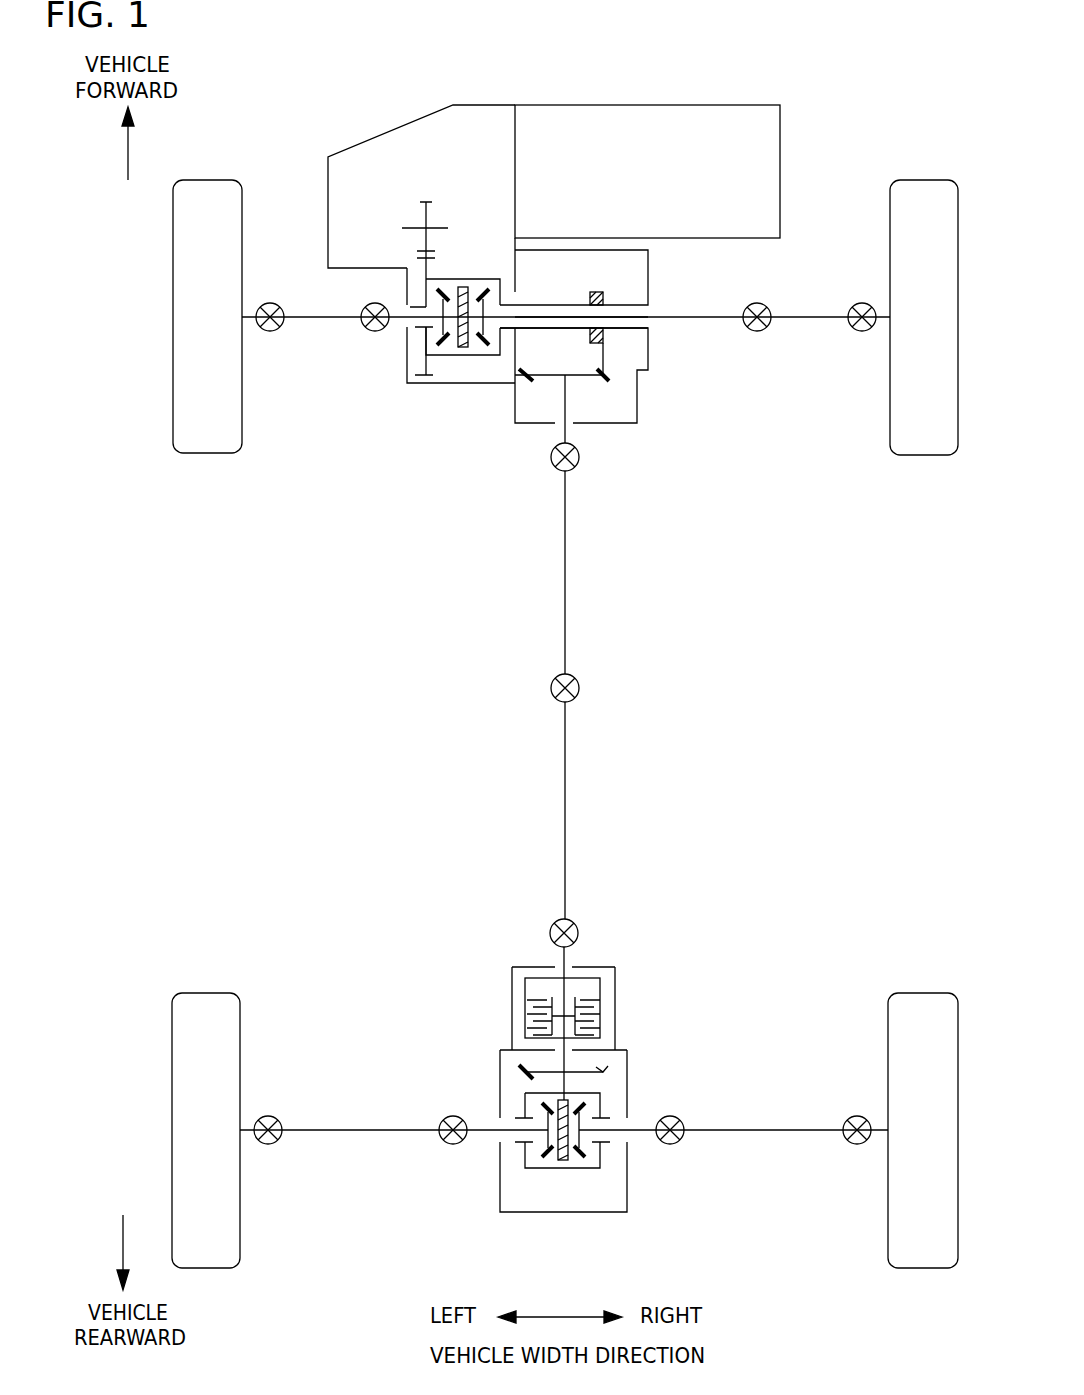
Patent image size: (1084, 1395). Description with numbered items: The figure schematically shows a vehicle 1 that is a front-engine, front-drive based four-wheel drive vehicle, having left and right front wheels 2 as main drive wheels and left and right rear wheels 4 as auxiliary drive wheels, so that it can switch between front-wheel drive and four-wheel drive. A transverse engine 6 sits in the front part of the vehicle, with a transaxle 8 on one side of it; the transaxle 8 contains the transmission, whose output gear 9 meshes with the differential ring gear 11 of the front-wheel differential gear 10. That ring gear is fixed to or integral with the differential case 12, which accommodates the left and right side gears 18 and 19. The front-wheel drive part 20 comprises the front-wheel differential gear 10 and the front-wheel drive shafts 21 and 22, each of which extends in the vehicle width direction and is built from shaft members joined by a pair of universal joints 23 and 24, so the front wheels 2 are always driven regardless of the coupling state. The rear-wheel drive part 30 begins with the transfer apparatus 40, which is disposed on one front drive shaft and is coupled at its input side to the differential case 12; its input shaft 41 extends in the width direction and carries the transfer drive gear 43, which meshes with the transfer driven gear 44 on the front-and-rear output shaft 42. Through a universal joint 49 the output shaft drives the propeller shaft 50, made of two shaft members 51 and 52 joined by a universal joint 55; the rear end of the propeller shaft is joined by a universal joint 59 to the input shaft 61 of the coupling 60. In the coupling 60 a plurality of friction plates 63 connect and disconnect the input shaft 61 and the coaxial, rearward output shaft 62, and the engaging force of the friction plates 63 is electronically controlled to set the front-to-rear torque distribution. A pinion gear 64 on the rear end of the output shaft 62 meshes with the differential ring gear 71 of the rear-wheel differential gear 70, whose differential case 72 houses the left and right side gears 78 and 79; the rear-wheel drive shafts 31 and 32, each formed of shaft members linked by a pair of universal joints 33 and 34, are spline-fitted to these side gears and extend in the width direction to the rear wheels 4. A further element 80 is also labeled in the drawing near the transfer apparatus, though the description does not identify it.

The vehicle 1 is at (888, 88).
The front wheels 2 is at (208, 180).
The rear wheels 4 is at (205, 993).
The engine 6 is at (718, 118).
The transaxle 8 is at (411, 137).
The output gear 9 is at (427, 200).
The front-wheel differential gear 10 is at (471, 264).
The differential ring gear 11 is at (432, 386).
The differential case 12 is at (468, 288).
The side gear 18 is at (425, 332).
The side gear 19 is at (503, 328).
The front-wheel drive part 20 is at (566, 264).
The front-wheel drive shaft 21 is at (297, 314).
The front-wheel drive shaft 22 is at (808, 316).
The universal joint 23 is at (375, 332).
The universal joint 24 is at (270, 332).
The rear-wheel drive part 30 is at (564, 736).
The rear-wheel drive shaft 31 is at (347, 1128).
The rear-wheel drive shaft 32 is at (765, 1128).
The universal joint 33 is at (453, 1145).
The universal joint 34 is at (268, 1145).
The transfer apparatus 40 is at (613, 331).
The input shaft 41 is at (546, 304).
The output shaft 42 is at (573, 408).
The transfer drive gear 43 is at (598, 288).
The transfer driven gear 44 is at (520, 377).
The universal joint 49 is at (548, 458).
The propeller shaft 50 is at (626, 695).
The shaft member 51 is at (565, 638).
The shaft member 52 is at (565, 752).
The universal joint 55 is at (551, 691).
The universal joint 59 is at (551, 928).
The coupling 60 is at (605, 995).
The input shaft 61 is at (552, 963).
The output shaft 62 is at (550, 1064).
The friction plates 63 is at (590, 985).
The pinion gear 64 is at (605, 1069).
The rear-wheel differential gear 70 is at (564, 1154).
The differential ring gear 71 is at (525, 1182).
The differential case 72 is at (582, 1168).
The side gear 78 is at (522, 1117).
The side gear 79 is at (603, 1118).
The bearing 80 is at (605, 352).